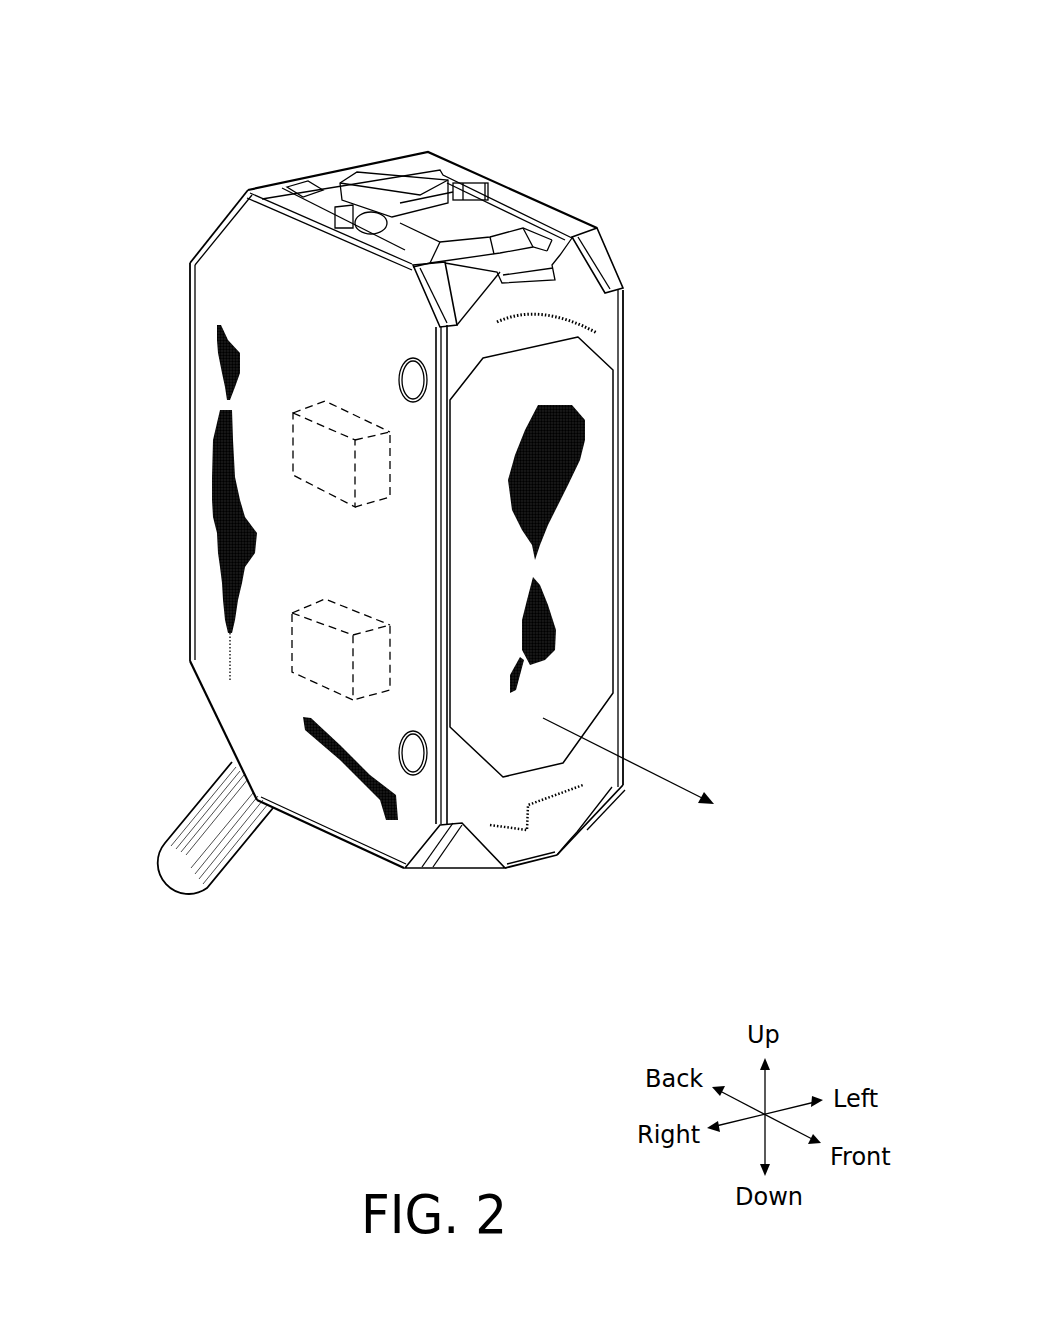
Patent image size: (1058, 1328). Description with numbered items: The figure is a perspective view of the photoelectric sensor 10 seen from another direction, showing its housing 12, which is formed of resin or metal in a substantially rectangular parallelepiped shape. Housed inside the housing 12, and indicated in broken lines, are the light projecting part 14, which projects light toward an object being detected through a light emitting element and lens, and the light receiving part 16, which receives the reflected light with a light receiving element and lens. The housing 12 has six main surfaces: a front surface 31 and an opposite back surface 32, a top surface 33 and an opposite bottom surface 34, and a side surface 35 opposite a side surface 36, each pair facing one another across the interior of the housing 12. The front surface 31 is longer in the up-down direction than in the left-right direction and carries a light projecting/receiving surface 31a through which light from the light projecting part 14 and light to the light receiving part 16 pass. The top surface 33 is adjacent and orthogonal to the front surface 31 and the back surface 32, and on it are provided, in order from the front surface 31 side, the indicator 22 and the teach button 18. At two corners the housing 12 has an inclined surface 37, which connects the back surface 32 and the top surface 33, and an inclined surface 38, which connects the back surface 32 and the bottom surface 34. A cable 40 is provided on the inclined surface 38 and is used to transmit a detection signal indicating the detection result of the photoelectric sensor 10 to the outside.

The photoelectric sensor 10 is at (734, 86).
The housing 12 is at (180, 475).
The light projecting part 14 is at (345, 605).
The light receiving part 16 is at (332, 417).
The teach button 18 is at (388, 177).
The indicator 22 is at (482, 205).
The front surface 31 is at (603, 322).
The light projecting/receiving surface 31a is at (588, 497).
The back surface 32 is at (189, 326).
The top surface 33 is at (293, 183).
The bottom surface 34 is at (313, 827).
The side surface 35 is at (623, 615).
The side surface 36 is at (253, 640).
The inclined surface 37 is at (210, 237).
The inclined surface 38 is at (212, 706).
The cable 40 is at (183, 857).